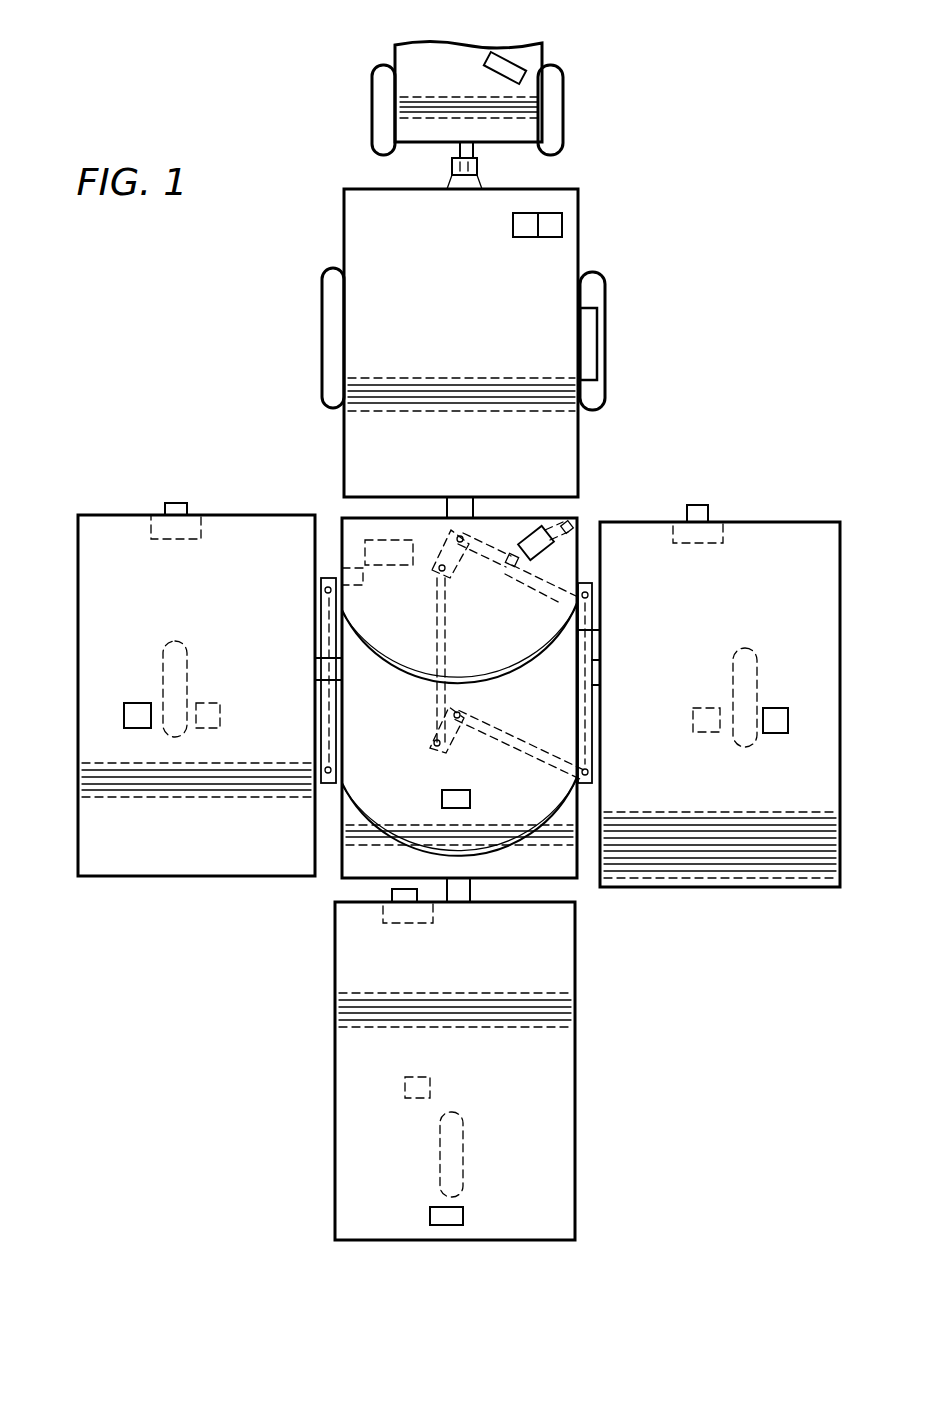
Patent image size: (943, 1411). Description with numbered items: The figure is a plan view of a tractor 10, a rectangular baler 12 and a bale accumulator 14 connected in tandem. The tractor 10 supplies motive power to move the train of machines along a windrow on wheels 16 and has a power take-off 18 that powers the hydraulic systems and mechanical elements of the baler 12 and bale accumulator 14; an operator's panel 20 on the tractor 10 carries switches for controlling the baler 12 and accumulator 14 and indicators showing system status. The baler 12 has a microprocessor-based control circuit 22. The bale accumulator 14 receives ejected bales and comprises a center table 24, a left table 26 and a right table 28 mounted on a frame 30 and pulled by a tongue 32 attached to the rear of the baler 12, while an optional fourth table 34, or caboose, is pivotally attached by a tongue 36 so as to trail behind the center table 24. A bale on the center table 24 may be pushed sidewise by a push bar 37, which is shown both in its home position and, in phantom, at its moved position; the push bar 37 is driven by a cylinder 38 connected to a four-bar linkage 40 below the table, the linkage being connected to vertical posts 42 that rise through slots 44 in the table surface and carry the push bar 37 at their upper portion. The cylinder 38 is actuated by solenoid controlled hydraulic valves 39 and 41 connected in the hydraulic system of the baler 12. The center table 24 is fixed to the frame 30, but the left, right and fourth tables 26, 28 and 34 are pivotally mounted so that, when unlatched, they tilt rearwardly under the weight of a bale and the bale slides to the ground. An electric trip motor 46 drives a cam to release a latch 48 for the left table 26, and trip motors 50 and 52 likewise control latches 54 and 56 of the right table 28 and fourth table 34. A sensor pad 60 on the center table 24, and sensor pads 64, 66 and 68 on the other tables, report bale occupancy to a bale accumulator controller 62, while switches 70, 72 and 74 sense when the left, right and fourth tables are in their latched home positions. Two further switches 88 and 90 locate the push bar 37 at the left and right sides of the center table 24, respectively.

The tractor 10 is at (573, 57).
The rectangular baler 12 is at (622, 292).
The bale accumulator 14 is at (600, 912).
The wheels 16 is at (372, 102).
The power take-off 18 is at (478, 167).
The operator's panel 20 is at (505, 58).
The microprocessor-based control circuit 22 is at (598, 338).
The center table 24 is at (570, 517).
The left table 26 is at (76, 516).
The right table 28 is at (846, 523).
The frame 30 is at (318, 672).
The tongue 32 is at (460, 508).
The fourth table 34 is at (577, 1020).
The tongue 36 is at (468, 902).
The push bar 37 is at (321, 612).
The cylinder 38 is at (518, 570).
The solenoid controlled hydraulic valve 39 is at (513, 226).
The 4-bar linkage 40 is at (462, 712).
The solenoid controlled hydraulic valve 41 is at (562, 227).
The vertical posts 42 is at (592, 597).
The slots 44 is at (398, 668).
The electric trip motor 46 is at (150, 522).
The latch 48 is at (175, 503).
The trip motor 50 is at (723, 525).
The trip motor 52 is at (408, 925).
The latch 54 is at (697, 505).
The latch 56 is at (400, 888).
The sensor pad 60 is at (472, 798).
The bale accumulator controller 62 is at (390, 565).
The sensor pad 64 is at (135, 703).
The sensor pad 66 is at (777, 708).
The sensor pad 68 is at (463, 1215).
The switch 70 is at (208, 703).
The switch 72 is at (710, 708).
The switch 74 is at (425, 1078).
The switch 88 is at (352, 586).
The switch 90 is at (565, 585).